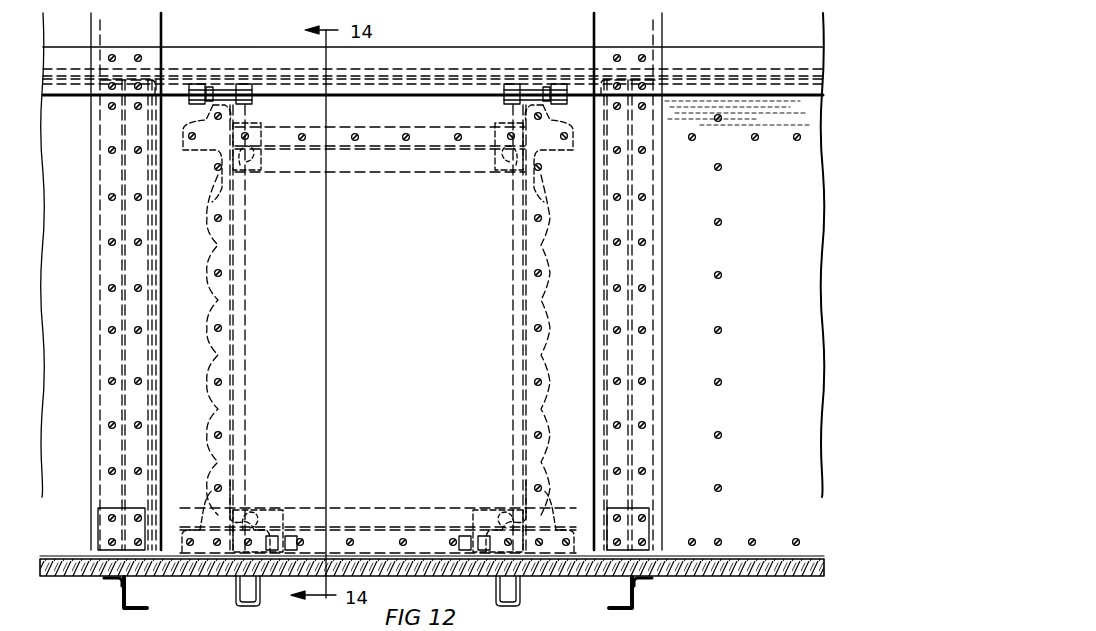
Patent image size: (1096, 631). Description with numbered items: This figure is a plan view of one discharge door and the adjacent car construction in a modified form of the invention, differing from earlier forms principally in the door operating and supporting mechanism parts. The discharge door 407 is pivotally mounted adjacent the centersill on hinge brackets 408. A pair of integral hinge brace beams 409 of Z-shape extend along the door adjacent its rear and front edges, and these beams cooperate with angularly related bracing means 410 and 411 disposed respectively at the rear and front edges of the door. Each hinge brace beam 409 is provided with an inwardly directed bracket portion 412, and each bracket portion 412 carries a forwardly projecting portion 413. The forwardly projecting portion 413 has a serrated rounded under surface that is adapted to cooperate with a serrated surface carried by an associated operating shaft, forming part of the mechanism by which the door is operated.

The discharge door 407 is at (378, 326).
The hinge bracket 408 is at (238, 90).
The hinge brace beam 409 is at (245, 327).
The bracing means 410 is at (392, 162).
The bracing means 411 is at (371, 502).
The bracket portion 412 is at (236, 556).
The forwardly projecting portion 413 is at (261, 600).